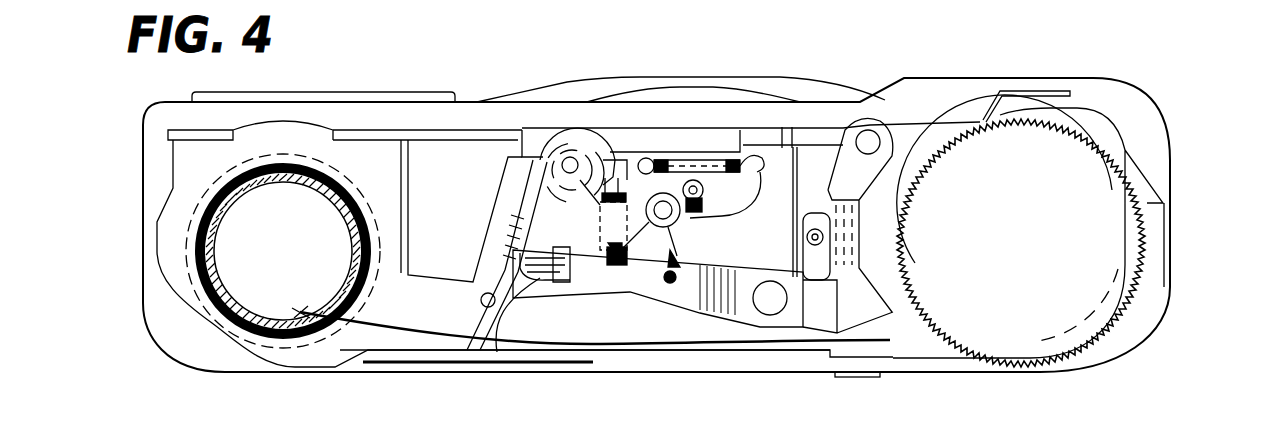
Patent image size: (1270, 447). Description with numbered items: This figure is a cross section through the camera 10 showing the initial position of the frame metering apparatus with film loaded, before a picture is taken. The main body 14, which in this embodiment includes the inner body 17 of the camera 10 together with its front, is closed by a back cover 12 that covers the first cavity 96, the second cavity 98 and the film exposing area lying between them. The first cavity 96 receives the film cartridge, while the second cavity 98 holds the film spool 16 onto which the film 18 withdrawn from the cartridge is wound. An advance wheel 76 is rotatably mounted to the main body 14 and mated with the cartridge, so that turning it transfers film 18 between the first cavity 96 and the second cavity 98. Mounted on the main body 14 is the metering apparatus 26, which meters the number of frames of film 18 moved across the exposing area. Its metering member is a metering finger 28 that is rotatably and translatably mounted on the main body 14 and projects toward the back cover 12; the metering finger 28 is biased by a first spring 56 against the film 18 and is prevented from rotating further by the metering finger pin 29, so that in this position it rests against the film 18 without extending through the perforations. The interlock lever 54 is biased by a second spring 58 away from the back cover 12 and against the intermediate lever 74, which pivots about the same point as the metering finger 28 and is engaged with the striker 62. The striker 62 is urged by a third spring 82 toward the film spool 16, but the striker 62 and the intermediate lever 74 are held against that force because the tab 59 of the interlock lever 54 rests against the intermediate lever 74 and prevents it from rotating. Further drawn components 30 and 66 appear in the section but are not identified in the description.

The camera 10 is at (1096, 66).
The back cover 12 is at (430, 372).
The main body 14 is at (149, 105).
The film spool 16 is at (227, 326).
The inner body 17 is at (398, 130).
The film 18 is at (360, 330).
The metering apparatus 26 is at (660, 128).
The metering finger 28 is at (505, 318).
The metering finger pin 29 is at (485, 307).
The base plate 30 is at (585, 360).
The interlock lever 54 is at (697, 280).
The first spring 56 is at (607, 192).
The second spring 58 is at (685, 232).
The tab 59 is at (556, 282).
The striker 62 is at (792, 157).
The lever 66 is at (560, 252).
The intermediate lever 74 is at (560, 157).
The advance wheel 76 is at (1103, 262).
The third spring 82 is at (700, 150).
The first cavity 96 is at (1117, 138).
The second cavity 98 is at (188, 292).